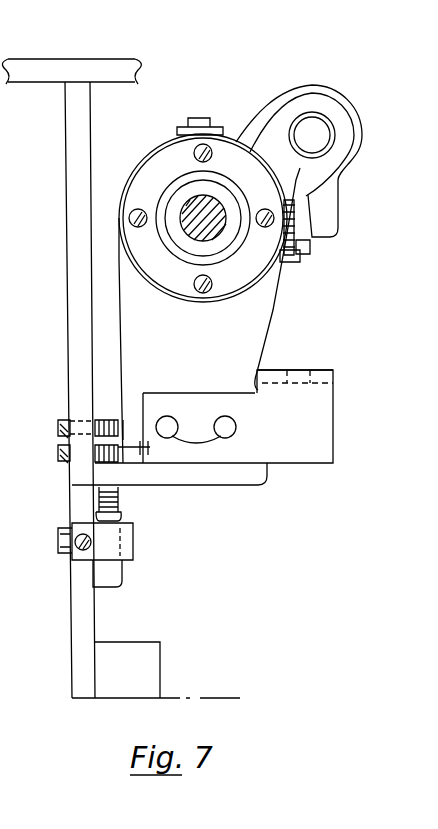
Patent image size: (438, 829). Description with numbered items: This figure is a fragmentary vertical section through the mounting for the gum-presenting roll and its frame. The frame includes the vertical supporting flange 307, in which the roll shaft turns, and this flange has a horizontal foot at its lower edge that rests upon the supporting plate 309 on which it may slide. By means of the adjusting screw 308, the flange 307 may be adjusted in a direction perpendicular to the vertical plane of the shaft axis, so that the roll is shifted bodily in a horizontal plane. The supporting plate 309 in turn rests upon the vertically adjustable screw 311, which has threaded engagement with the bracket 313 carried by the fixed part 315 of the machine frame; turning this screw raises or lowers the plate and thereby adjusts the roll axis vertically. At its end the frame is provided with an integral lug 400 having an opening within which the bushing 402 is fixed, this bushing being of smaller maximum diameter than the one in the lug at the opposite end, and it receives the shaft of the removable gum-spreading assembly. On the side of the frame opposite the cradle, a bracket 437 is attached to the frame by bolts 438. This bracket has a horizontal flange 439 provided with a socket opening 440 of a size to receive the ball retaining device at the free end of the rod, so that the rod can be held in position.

The vertical supporting flange 307 is at (272, 297).
The adjusting screw 308 is at (58, 450).
The supporting plate 309 is at (222, 488).
The vertically adjustable screw 311 is at (120, 506).
The bracket 313 is at (122, 556).
The fixed part of the machine frame 315 is at (80, 612).
The lug 400 is at (358, 146).
The bushing 402 is at (322, 112).
The bracket 437 is at (335, 430).
The bolts 438 is at (232, 436).
The horizontal flange 439 is at (335, 372).
The socket opening 440 is at (290, 372).